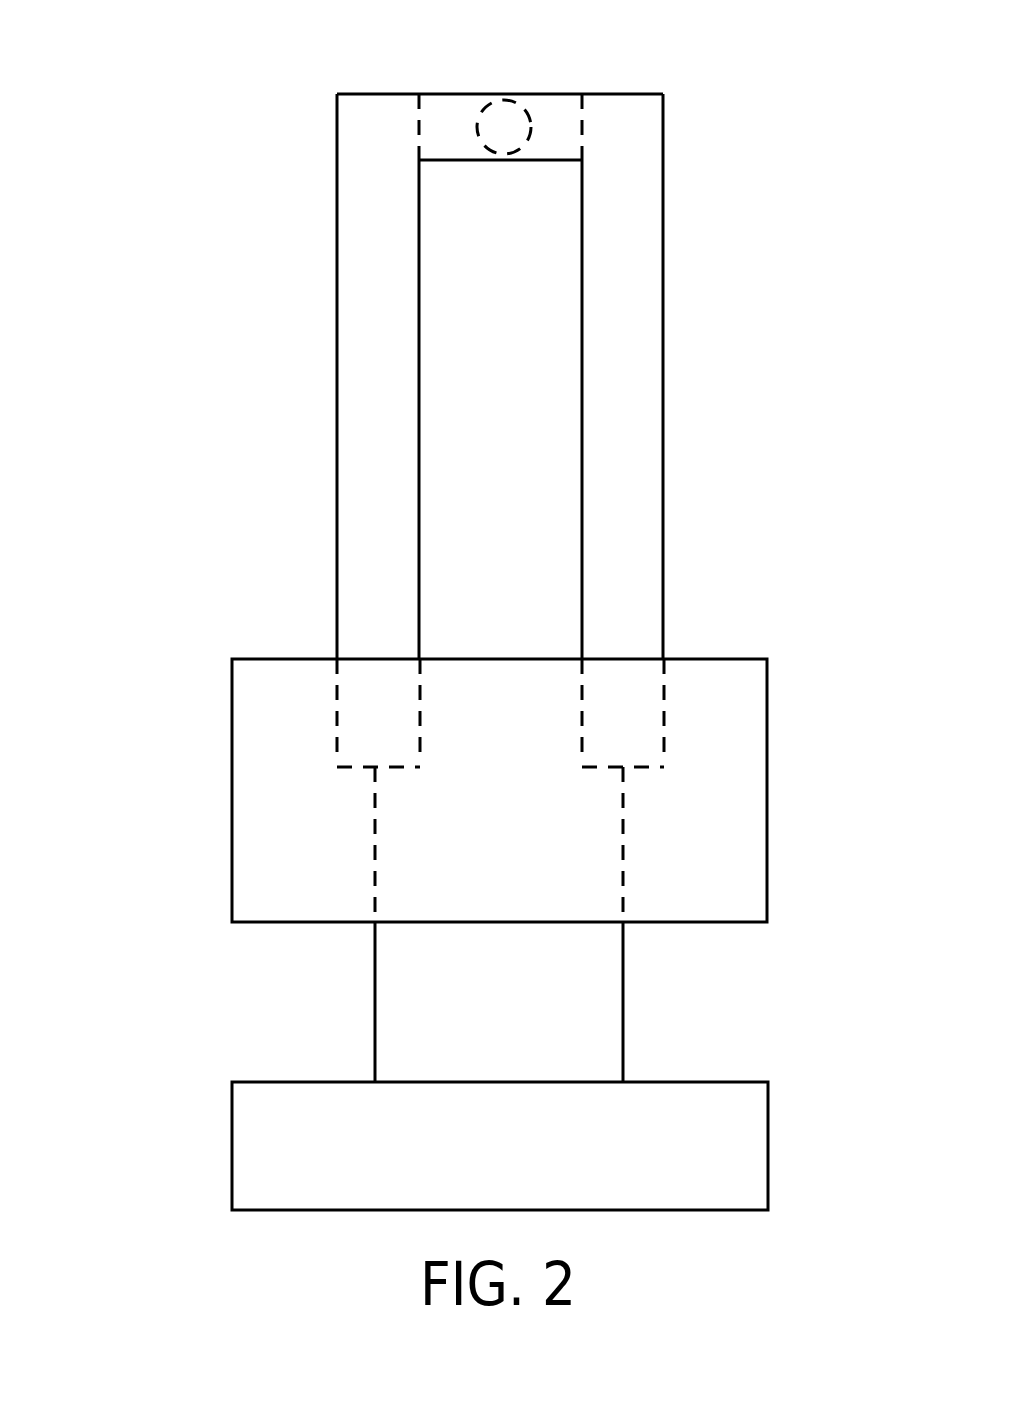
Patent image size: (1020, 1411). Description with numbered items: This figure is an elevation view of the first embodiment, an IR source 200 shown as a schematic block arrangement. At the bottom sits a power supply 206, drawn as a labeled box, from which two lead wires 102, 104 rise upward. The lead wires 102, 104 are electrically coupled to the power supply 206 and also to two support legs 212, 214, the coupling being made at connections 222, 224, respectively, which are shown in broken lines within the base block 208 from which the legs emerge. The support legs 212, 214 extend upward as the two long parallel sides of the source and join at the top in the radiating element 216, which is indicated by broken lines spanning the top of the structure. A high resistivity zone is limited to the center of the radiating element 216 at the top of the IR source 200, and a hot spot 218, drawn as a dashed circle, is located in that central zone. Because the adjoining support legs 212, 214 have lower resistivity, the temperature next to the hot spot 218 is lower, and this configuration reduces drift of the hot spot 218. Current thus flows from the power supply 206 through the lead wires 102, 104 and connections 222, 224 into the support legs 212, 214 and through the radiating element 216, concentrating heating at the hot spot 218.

The IR source 200 is at (163, 142).
The support leg 212 is at (337, 448).
The support leg 214 is at (663, 448).
The radiating element 216 is at (447, 107).
The hot spot 218 is at (523, 110).
The base housing 208 is at (232, 760).
The connection 222 is at (373, 772).
The connection 224 is at (625, 772).
The lead wire 102 is at (375, 1009).
The lead wire 104 is at (623, 1009).
The power supply 206 is at (232, 1146).